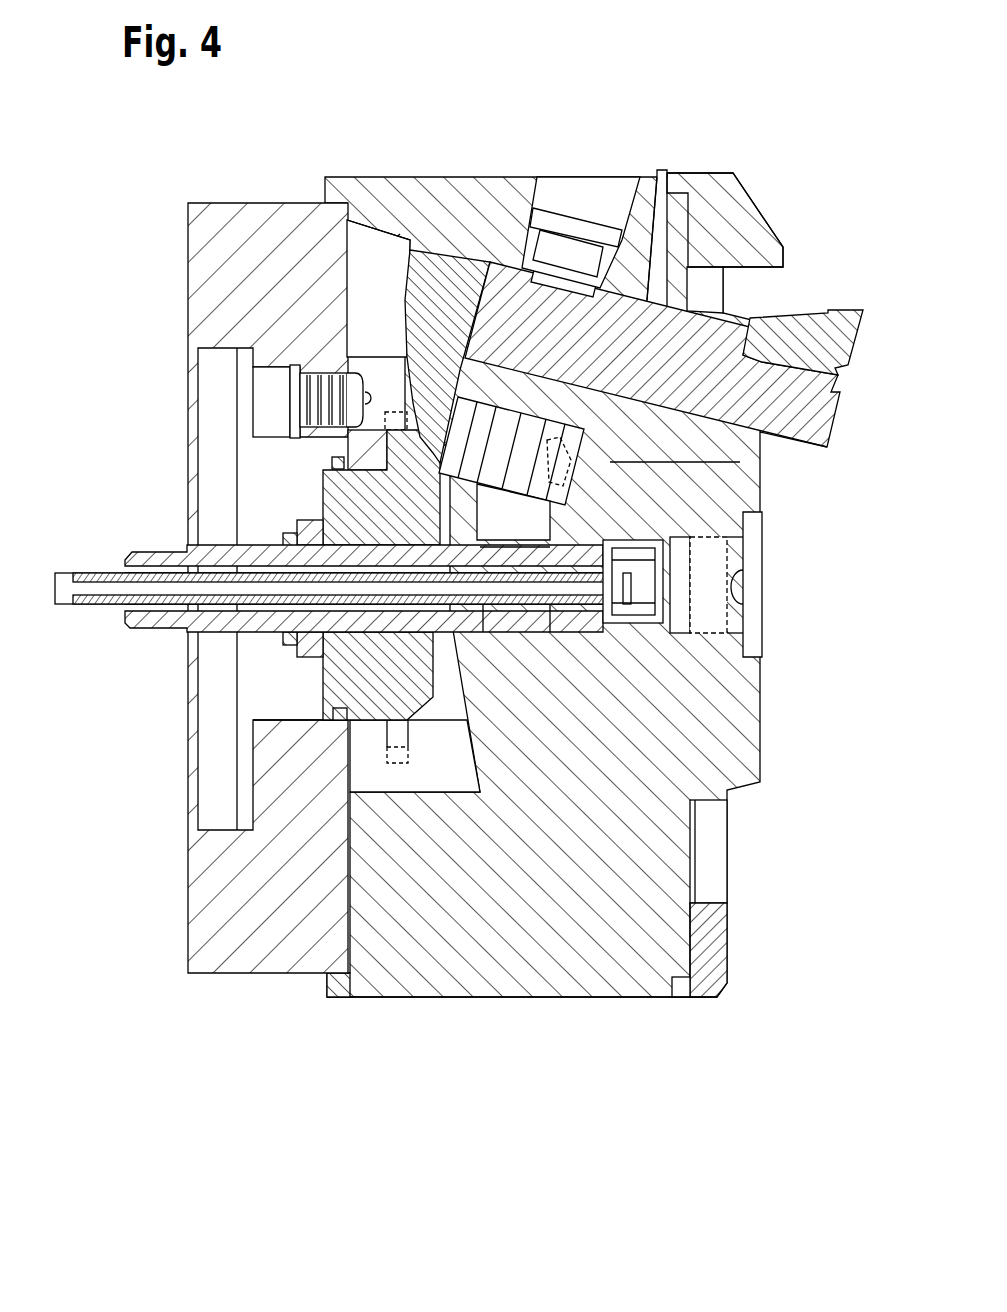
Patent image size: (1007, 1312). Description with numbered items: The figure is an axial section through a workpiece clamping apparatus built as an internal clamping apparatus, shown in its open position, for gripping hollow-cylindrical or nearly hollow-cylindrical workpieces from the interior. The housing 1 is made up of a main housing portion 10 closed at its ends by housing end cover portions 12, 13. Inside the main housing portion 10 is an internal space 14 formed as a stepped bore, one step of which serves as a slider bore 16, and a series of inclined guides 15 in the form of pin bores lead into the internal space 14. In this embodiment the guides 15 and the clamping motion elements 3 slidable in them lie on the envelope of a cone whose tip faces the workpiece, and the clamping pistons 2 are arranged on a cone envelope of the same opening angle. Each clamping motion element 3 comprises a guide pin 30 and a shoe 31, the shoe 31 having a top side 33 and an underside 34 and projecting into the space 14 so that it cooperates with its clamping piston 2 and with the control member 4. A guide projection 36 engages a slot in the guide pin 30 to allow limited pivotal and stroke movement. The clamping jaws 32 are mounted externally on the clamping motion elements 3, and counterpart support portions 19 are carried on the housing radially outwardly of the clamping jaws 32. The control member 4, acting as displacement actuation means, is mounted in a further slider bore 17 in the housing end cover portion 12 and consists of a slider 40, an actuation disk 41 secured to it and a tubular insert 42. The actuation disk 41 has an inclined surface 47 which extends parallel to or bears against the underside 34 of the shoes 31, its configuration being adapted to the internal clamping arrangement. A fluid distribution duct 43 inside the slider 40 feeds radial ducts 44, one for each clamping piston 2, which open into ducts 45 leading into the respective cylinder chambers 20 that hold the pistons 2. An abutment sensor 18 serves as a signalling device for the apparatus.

The housing 1 is at (590, 1003).
The clamping pistons 2 is at (590, 474).
The clamping motion elements 3 is at (658, 285).
The control member 4 is at (250, 640).
The main housing portion 10 is at (657, 935).
The housing end cover portion 12 is at (258, 913).
The housing end cover portion 13 is at (750, 618).
The internal space 14 is at (390, 784).
The inclined guides 15 is at (410, 238).
The slider bore 16 is at (575, 615).
The further slider bore 17 is at (298, 722).
The abutment sensor 18 is at (368, 398).
The counterpart support portions 19 is at (722, 205).
The cylinder chambers 20 is at (612, 463).
The guide pin 30 is at (733, 330).
The shoe 31 is at (462, 298).
The clamping jaw 32 is at (840, 337).
The top side 33 is at (367, 357).
The underside 34 is at (347, 357).
The guide projection 36 is at (565, 252).
The slider 40 is at (162, 618).
The actuation disk 41 is at (342, 680).
The tubular insert 42 is at (60, 573).
The fluid distribution duct 43 is at (138, 572).
The radial ducts 44 is at (525, 620).
The ducts 45 is at (547, 525).
The inclined surface 47 is at (320, 466).